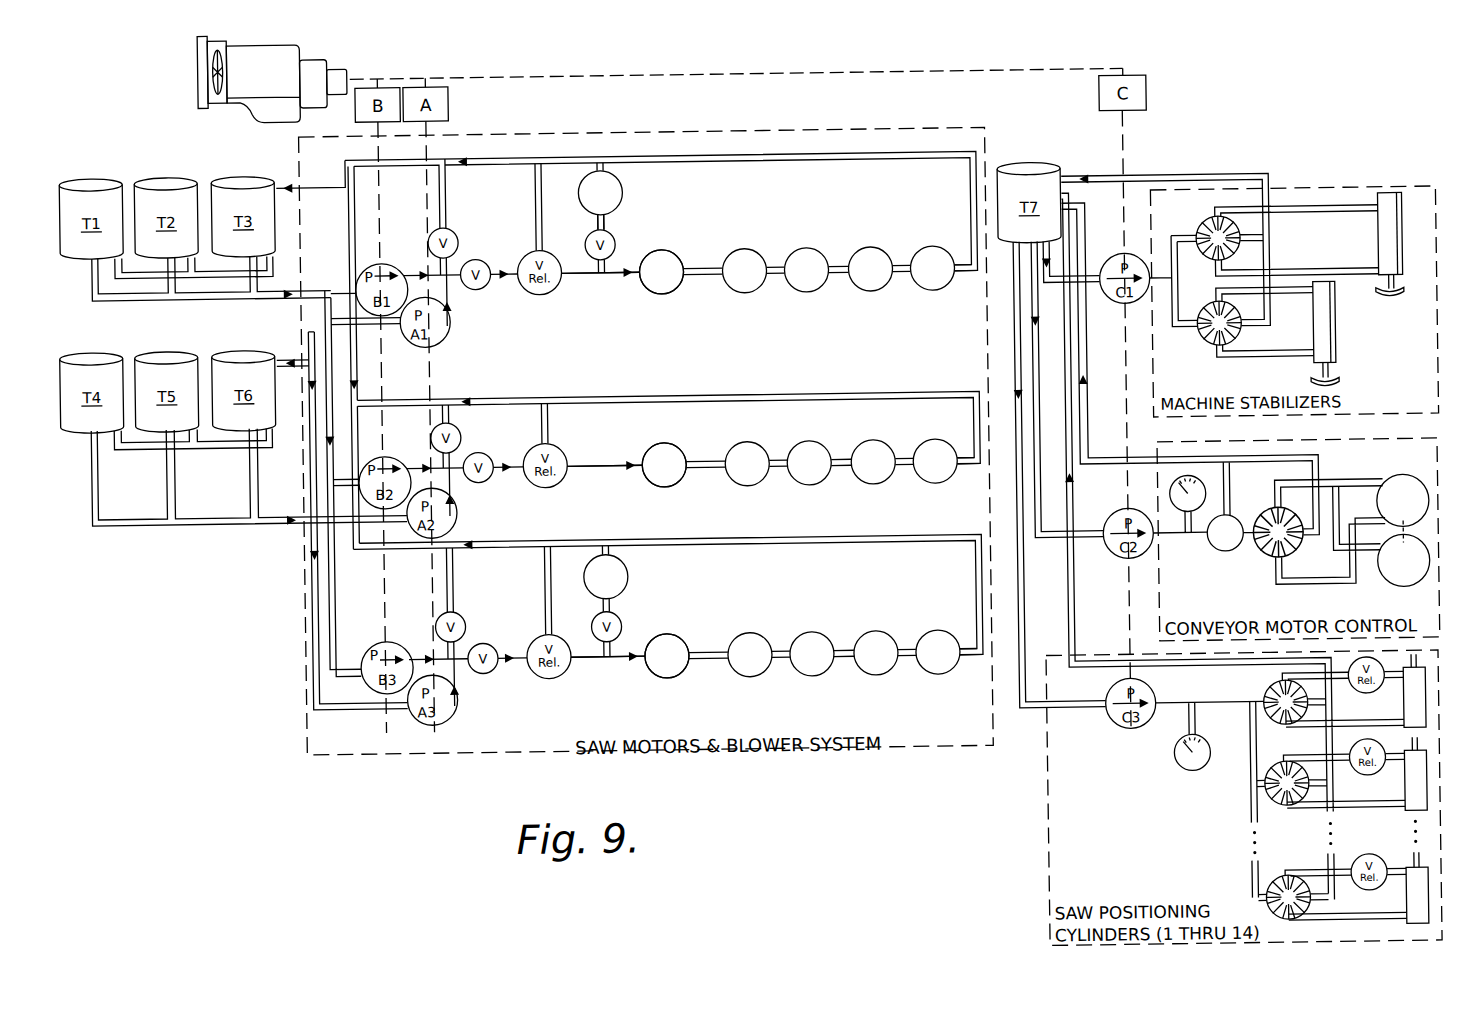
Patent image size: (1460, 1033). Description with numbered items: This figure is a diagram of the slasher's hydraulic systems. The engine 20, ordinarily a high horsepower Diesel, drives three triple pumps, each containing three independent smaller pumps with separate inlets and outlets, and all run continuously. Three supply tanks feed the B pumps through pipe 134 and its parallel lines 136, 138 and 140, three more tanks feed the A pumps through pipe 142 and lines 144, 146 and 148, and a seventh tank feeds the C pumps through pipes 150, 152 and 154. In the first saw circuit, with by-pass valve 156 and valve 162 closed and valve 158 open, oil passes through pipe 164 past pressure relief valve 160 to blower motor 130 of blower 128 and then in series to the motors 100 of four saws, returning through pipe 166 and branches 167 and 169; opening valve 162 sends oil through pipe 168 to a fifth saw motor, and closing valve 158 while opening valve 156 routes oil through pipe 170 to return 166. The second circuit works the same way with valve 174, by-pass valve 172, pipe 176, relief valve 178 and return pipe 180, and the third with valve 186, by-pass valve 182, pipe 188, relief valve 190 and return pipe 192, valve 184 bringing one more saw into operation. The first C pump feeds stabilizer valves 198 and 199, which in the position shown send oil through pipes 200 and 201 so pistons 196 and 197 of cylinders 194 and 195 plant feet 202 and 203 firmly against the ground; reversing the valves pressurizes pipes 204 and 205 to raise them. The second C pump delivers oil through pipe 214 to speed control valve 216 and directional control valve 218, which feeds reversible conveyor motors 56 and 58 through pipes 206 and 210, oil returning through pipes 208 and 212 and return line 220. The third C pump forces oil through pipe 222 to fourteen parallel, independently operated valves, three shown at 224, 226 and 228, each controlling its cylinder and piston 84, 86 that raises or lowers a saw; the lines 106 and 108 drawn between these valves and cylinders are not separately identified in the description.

The engine 20 is at (248, 65).
The saw motor 100 is at (627, 183).
The return line 106 is at (1315, 767).
The supply line 108 is at (1326, 688).
The blower 128 is at (673, 252).
The blower motor 130 is at (679, 289).
The pipe 134 is at (200, 292).
The parallel line 136 is at (346, 286).
The parallel line 138 is at (345, 478).
The parallel line 140 is at (355, 664).
The pipe 142 is at (222, 518).
The parallel line 144 is at (384, 320).
The parallel line 146 is at (362, 528).
The parallel line 148 is at (320, 704).
The pipe 150 is at (1166, 281).
The pipe 152 is at (1054, 546).
The pipe 154 is at (1068, 706).
The by-pass valve 156 is at (449, 224).
The valve 158 is at (481, 257).
The pressure relief valve 160 is at (545, 248).
The valve 162 is at (617, 243).
The pipe 164 is at (582, 275).
The pipe 166 is at (823, 162).
The parallel branch 167 is at (312, 181).
The pipe 168 is at (612, 225).
The parallel branch 169 is at (293, 352).
The pipe 170 is at (451, 186).
The by-pass valve 172 is at (459, 425).
The valve 174 is at (485, 448).
The pipe 176 is at (584, 456).
The relief valve 178 is at (537, 482).
The pipe 180 is at (681, 399).
The by-pass valve 182 is at (459, 612).
The valve 184 is at (617, 612).
The valve 186 is at (485, 639).
The pipe 188 is at (587, 660).
The relief valve 190 is at (541, 632).
The pipe 192 is at (768, 545).
The cylinder 194 is at (1392, 210).
The cylinder 195 is at (1340, 341).
The piston 196 is at (1388, 300).
The piston 197 is at (1332, 388).
The valve 198 is at (1246, 238).
The valve 199 is at (1208, 313).
The pipe 200 is at (1326, 214).
The pipe 201 is at (1291, 296).
The foot 202 is at (1396, 307).
The foot 203 is at (1342, 392).
The pipe 204 is at (1326, 280).
The pipe 205 is at (1228, 366).
The supply pipe 206 is at (1349, 488).
The supply pipe 208 is at (1362, 527).
The supply pipe 210 is at (1334, 548).
The supply pipe 212 is at (1308, 592).
The pipe 214 is at (1165, 541).
The speed control valve 216 is at (1212, 553).
The directional control valve 218 is at (1245, 580).
The return line 220 is at (1110, 462).
The pipe 222 is at (1188, 705).
The valve 224 is at (1267, 703).
The valve 226 is at (1262, 784).
The valve 228 is at (1268, 886).
The hydraulic motor 56 is at (1401, 484).
The hydraulic motor 58 is at (1380, 576).
The cylinder 84 is at (1400, 727).
The piston 86 is at (1408, 669).